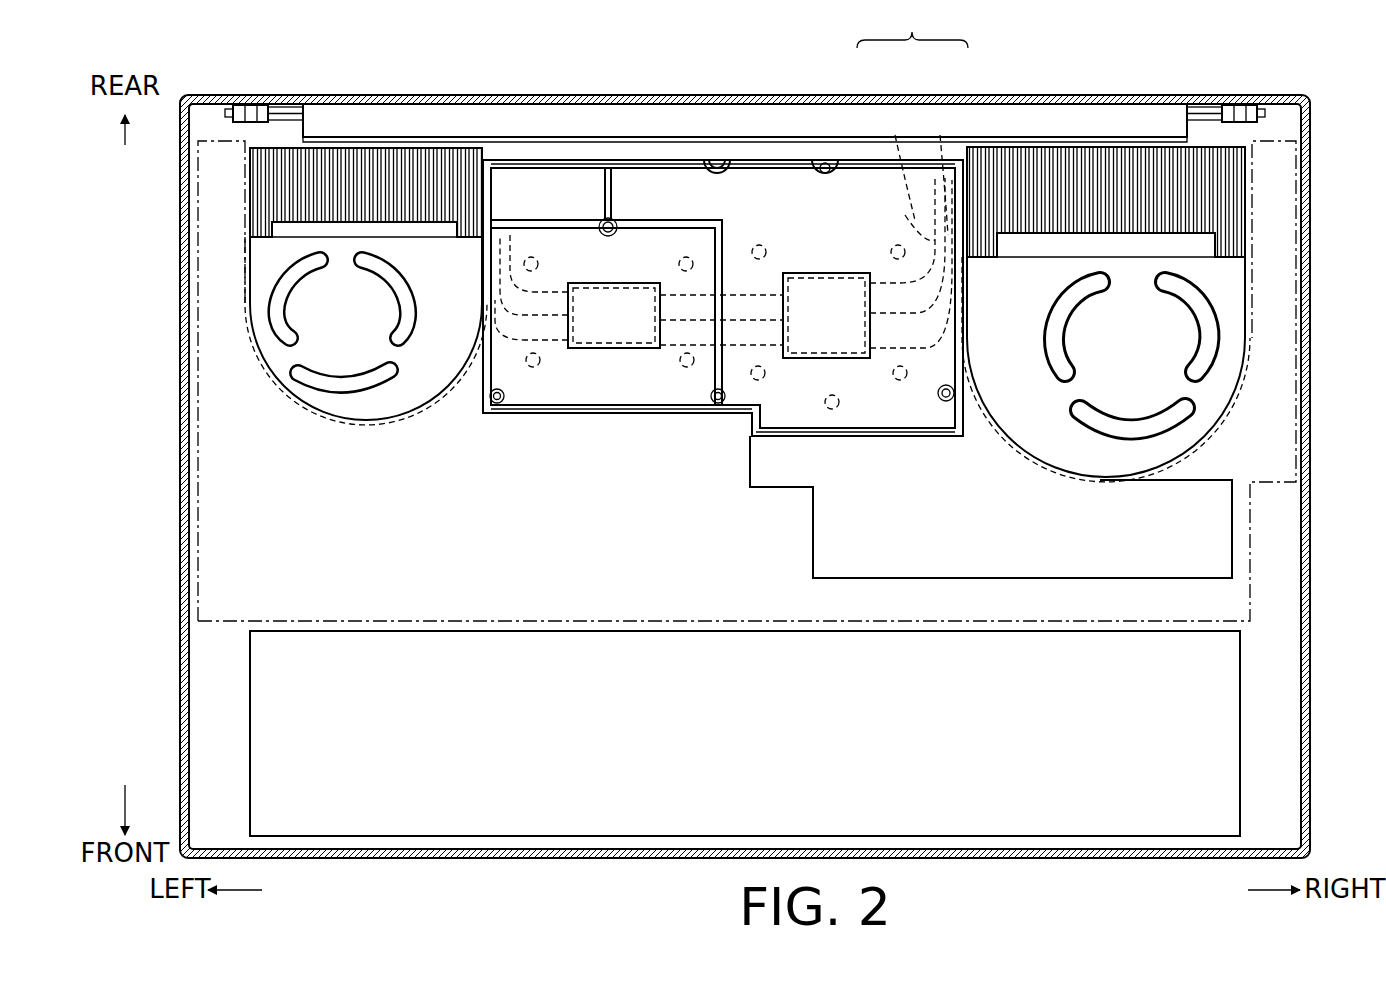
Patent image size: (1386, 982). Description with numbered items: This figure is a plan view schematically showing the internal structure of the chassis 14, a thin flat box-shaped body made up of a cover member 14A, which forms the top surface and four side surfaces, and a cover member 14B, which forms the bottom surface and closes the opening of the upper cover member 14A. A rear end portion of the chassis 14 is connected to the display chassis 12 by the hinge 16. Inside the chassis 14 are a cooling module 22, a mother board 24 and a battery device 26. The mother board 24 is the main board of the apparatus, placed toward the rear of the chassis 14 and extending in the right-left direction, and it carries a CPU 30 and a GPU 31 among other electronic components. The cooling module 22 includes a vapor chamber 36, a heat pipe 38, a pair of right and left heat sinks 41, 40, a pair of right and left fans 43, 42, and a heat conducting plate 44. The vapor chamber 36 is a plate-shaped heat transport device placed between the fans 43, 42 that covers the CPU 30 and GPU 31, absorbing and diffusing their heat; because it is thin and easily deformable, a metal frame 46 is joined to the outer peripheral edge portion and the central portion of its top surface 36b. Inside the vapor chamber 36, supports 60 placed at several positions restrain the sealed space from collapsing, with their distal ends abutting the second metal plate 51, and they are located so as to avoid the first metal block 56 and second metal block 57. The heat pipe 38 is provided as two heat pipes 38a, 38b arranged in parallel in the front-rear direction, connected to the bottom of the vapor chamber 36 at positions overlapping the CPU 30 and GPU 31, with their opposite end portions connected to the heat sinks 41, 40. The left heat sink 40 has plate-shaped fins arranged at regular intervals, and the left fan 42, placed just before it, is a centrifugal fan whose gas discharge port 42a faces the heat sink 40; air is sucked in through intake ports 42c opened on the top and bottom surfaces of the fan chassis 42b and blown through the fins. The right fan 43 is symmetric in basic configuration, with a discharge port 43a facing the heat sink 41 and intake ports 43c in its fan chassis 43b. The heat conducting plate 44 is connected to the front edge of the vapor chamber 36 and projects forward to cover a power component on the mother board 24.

The display chassis 12 is at (1034, 92).
The chassis 14 is at (196, 41).
The cover member 14A is at (178, 667).
The cover member 14B is at (208, 736).
The hinge 16 is at (250, 104).
The cooling module 22 is at (683, 445).
The mother board 24 is at (420, 625).
The battery device 26 is at (580, 838).
The CPU 30 is at (592, 345).
The GPU 31 is at (857, 352).
The vapor chamber 36 is at (751, 193).
The top surface 36b is at (651, 380).
The heat pipe 38 is at (912, 121).
The heat pipe 38a is at (895, 135).
The heat pipe 38b is at (940, 135).
The heat sink 40 is at (352, 148).
The heat sink 41 is at (1120, 146).
The fan 42 is at (244, 296).
The gas discharge port 42a is at (345, 240).
The fan chassis 42b is at (345, 410).
The intake ports 42c is at (345, 386).
The fan 43 is at (1252, 312).
The discharge port 43a is at (1190, 246).
The fan chassis 43b is at (1170, 460).
The intake ports 43c is at (1145, 420).
The heat conducting plate 44 is at (972, 558).
The frame 46 is at (583, 158).
The second metal plate 51 is at (641, 185).
The first metal block 56 is at (590, 335).
The second metal block 57 is at (805, 345).
The support 60 is at (530, 256).